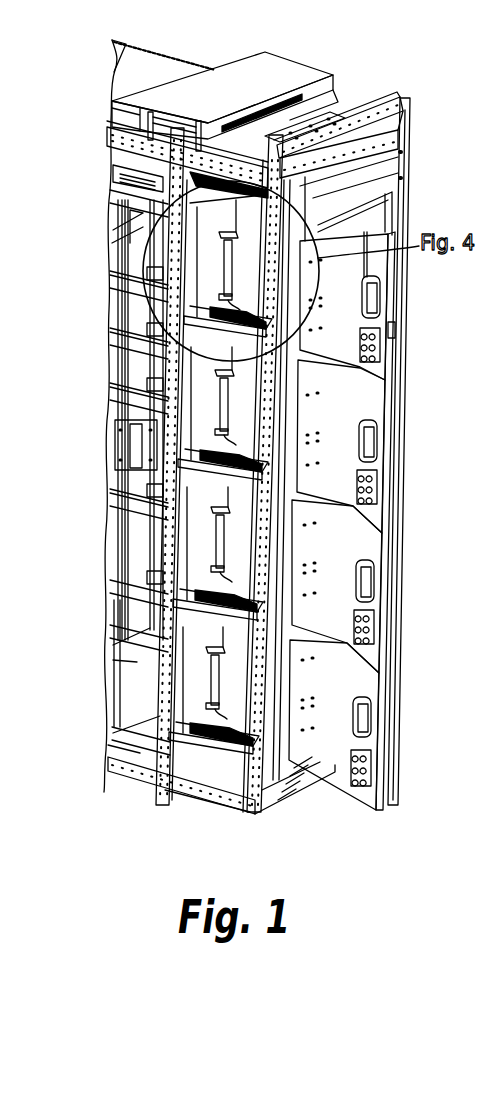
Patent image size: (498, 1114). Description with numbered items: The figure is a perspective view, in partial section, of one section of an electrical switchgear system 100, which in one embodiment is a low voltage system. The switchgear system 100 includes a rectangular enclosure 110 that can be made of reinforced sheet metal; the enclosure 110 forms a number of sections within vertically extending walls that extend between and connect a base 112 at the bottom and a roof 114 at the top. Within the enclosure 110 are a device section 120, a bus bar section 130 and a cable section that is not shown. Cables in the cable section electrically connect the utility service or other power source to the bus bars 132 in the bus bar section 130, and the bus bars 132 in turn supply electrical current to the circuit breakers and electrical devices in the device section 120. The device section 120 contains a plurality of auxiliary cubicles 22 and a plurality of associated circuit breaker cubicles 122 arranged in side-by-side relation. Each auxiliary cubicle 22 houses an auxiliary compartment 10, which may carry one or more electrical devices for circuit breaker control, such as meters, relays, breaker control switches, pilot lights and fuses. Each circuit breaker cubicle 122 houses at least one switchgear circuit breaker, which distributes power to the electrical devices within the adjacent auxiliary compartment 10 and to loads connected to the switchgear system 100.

The switchgear system 100 is at (363, 72).
The enclosure 110 is at (420, 104).
The base 112 is at (181, 802).
The roof 114 is at (218, 68).
The device section 120 is at (245, 816).
The circuit breaker cubicle 122 is at (386, 208).
The bus bar section 130 is at (137, 758).
The bus bars 132 is at (110, 221).
The auxiliary cubicle 22 is at (299, 296).
The auxiliary compartment 10 is at (386, 334).